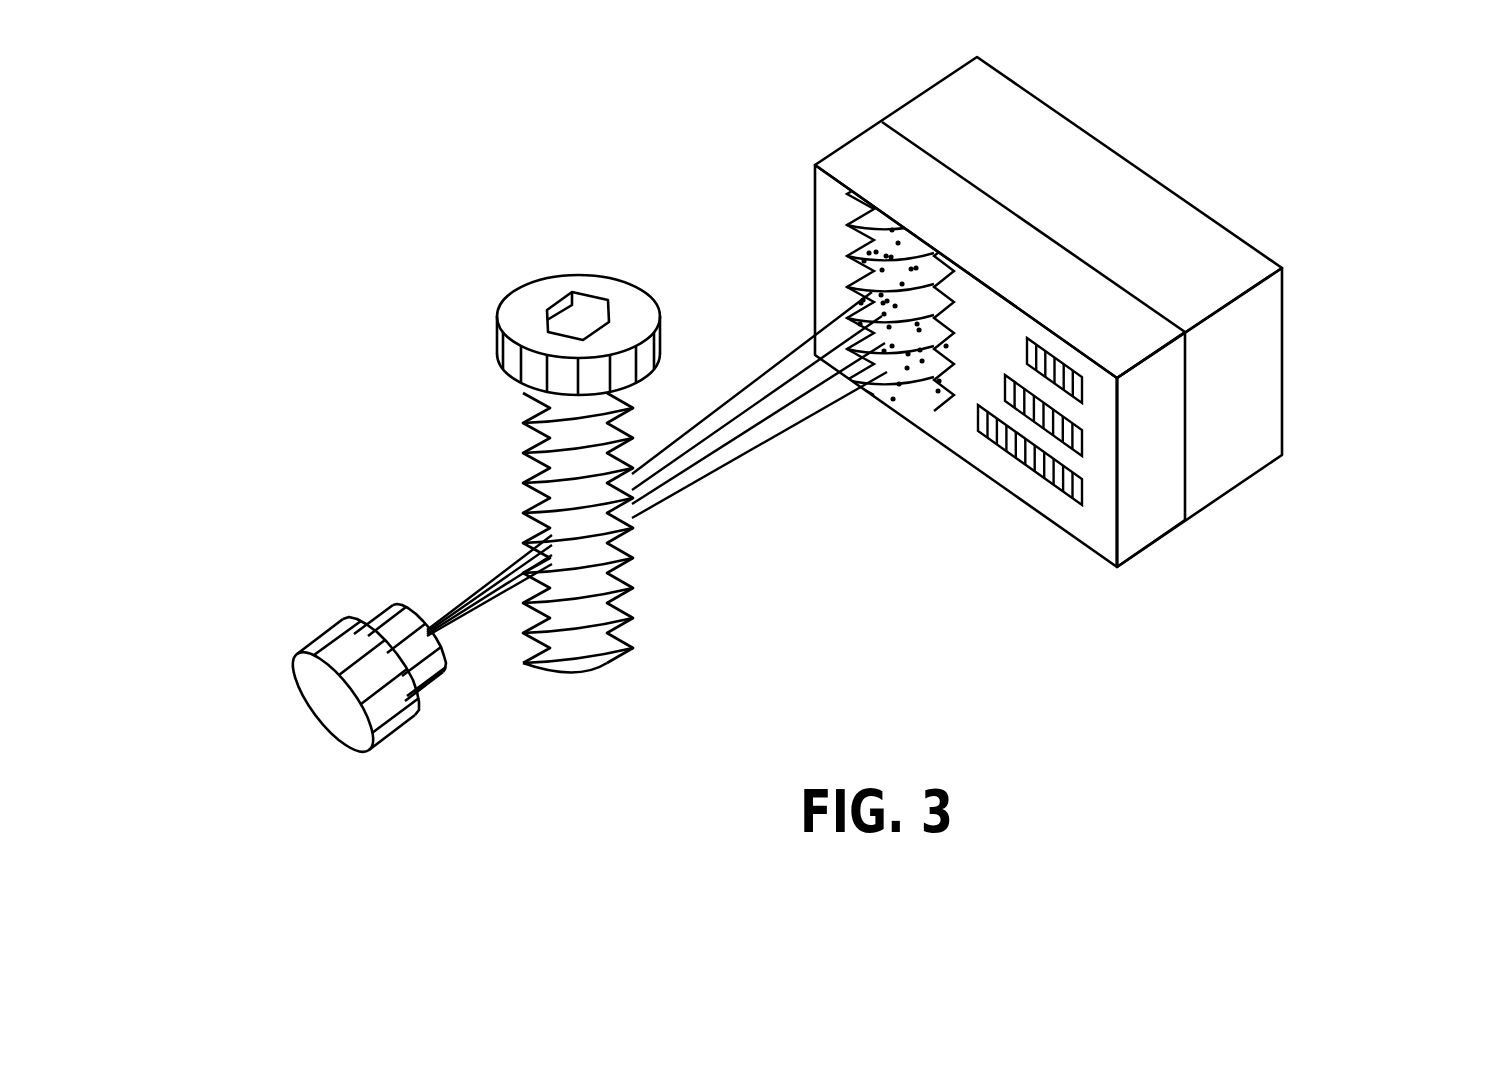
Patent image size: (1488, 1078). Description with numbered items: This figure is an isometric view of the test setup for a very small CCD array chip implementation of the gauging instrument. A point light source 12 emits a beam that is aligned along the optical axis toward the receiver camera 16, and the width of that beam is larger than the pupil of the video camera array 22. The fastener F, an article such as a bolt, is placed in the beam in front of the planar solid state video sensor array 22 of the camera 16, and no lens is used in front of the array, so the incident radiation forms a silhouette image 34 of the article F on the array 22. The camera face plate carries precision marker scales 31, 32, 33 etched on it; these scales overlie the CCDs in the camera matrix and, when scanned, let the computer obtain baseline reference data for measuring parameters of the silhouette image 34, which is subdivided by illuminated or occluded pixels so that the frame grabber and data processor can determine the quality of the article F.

The light source 12 is at (312, 702).
The fastener F is at (527, 437).
The receiver camera 16 is at (1230, 443).
The planar solid state video sensor array 22 is at (1147, 503).
The first contact strip 31 is at (1117, 378).
The second contact strip 32 is at (1085, 436).
The third contact strip 33 is at (1085, 492).
The silhouette image 34 is at (916, 400).